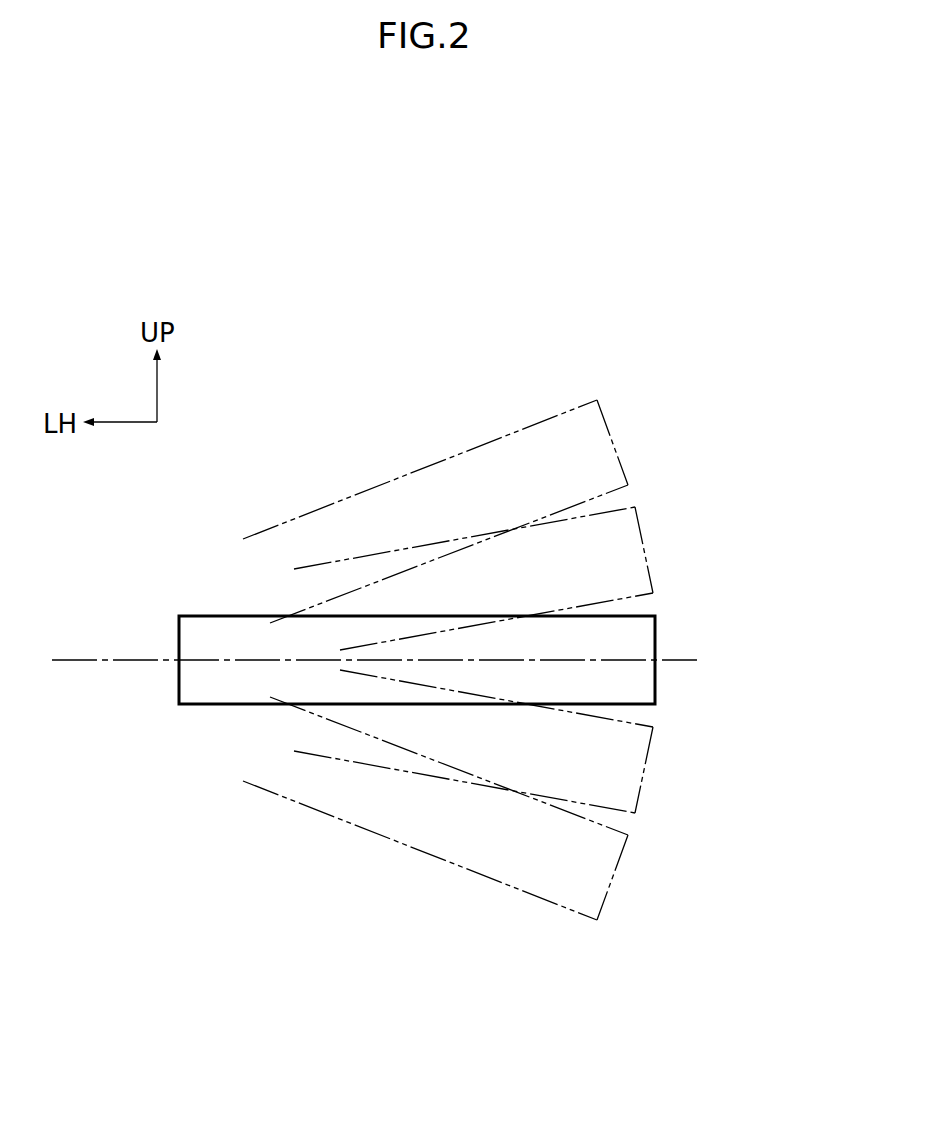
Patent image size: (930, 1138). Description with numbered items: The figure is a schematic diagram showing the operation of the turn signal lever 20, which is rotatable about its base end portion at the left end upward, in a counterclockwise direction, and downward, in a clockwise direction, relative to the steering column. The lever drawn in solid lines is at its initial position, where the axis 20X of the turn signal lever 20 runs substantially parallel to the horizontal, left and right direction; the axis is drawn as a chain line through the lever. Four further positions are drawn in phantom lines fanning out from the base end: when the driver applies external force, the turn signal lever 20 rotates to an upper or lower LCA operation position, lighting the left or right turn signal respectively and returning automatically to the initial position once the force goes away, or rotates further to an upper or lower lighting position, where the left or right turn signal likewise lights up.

The turn signal lever 20 is at (494, 660).
The axis of the turn signal lever 20X is at (105, 658).